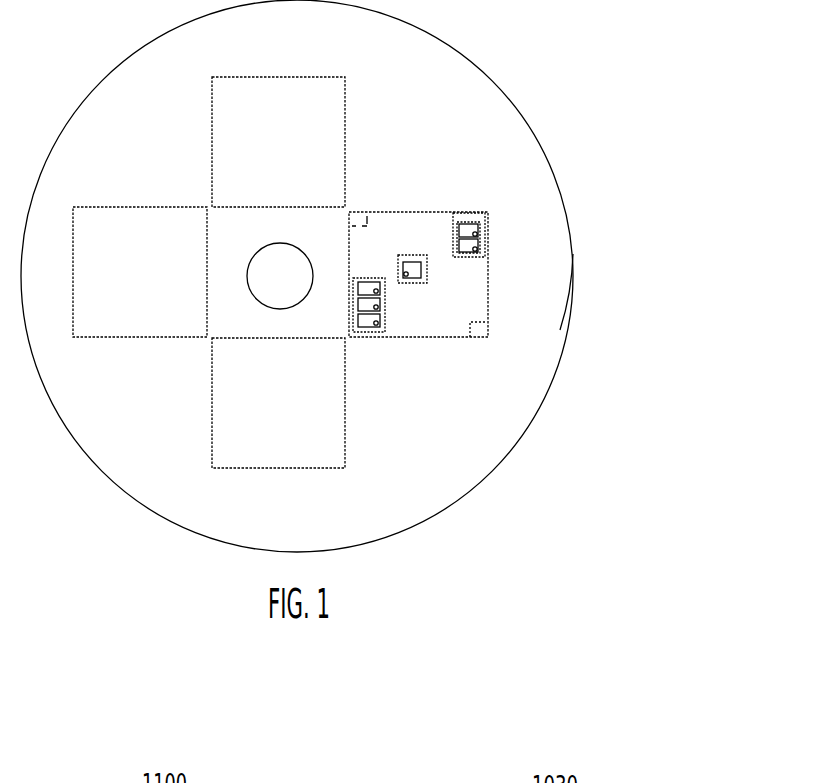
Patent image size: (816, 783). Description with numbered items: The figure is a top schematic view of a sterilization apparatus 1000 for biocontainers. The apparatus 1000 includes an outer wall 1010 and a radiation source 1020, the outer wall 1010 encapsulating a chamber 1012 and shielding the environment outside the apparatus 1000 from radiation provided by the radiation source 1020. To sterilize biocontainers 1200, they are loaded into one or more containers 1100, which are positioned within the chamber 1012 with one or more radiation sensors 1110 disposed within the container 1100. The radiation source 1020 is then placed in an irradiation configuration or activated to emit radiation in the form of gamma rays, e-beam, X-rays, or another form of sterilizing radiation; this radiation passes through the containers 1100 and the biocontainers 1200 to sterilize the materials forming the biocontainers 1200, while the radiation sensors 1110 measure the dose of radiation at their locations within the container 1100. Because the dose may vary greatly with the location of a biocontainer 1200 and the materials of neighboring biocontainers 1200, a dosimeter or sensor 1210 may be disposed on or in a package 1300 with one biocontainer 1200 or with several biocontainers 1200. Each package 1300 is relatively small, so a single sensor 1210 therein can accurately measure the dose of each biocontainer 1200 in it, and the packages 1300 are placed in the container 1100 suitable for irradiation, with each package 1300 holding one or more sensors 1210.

The sterilization apparatus 1000 is at (590, 117).
The outer wall 1010 is at (573, 255).
The chamber 1012 is at (439, 131).
The radiation source 1020 is at (302, 289).
The container 1100 is at (209, 184).
The radiation sensor 1110 is at (358, 220).
The biocontainer 1200 is at (359, 320).
The sensor 1210 is at (473, 248).
The package 1300 is at (414, 254).